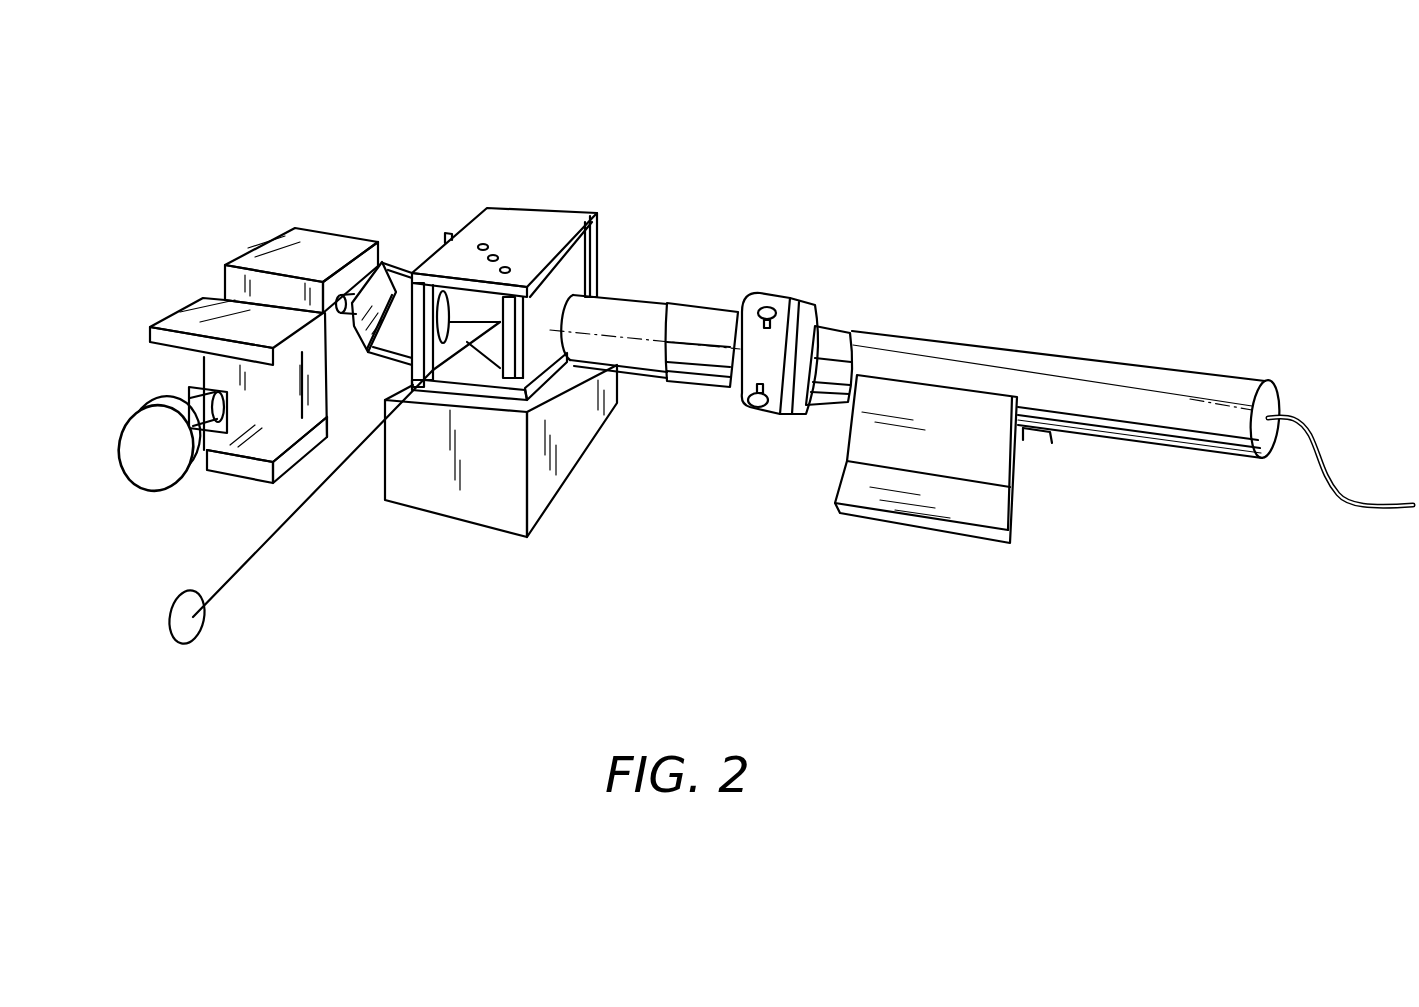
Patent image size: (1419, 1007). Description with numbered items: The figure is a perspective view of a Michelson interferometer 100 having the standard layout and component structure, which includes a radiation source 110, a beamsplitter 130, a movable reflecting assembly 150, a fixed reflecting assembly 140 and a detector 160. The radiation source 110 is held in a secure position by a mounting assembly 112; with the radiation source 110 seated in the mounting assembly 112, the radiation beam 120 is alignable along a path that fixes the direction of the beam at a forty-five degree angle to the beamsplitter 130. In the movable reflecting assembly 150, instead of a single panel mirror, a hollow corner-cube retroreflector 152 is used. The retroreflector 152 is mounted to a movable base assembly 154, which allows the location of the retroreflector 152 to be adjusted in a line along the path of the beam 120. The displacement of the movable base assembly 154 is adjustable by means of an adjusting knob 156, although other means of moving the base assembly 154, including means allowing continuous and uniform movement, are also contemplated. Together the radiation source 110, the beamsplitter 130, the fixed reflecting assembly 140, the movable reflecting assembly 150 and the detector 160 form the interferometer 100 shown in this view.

The interferometer 100 is at (926, 64).
The radiation source 110 is at (928, 335).
The mounting assembly 112 is at (1013, 506).
The radiation beam 120 is at (538, 325).
The beamsplitter 130 is at (520, 350).
The fixed reflecting assembly 140 is at (567, 270).
The movable reflecting assembly 150 is at (411, 269).
The hollow corner-cube retroreflector 152 is at (349, 326).
The movable base assembly 154 is at (264, 336).
The adjusting knob 156 is at (168, 470).
The detector 160 is at (193, 643).